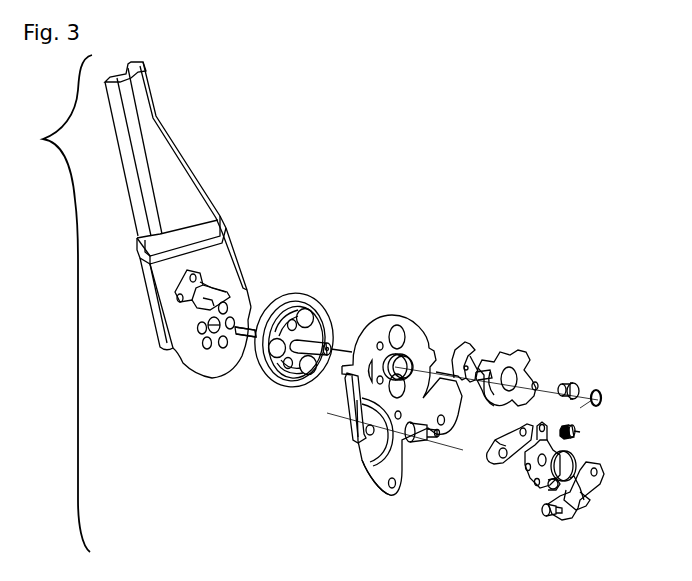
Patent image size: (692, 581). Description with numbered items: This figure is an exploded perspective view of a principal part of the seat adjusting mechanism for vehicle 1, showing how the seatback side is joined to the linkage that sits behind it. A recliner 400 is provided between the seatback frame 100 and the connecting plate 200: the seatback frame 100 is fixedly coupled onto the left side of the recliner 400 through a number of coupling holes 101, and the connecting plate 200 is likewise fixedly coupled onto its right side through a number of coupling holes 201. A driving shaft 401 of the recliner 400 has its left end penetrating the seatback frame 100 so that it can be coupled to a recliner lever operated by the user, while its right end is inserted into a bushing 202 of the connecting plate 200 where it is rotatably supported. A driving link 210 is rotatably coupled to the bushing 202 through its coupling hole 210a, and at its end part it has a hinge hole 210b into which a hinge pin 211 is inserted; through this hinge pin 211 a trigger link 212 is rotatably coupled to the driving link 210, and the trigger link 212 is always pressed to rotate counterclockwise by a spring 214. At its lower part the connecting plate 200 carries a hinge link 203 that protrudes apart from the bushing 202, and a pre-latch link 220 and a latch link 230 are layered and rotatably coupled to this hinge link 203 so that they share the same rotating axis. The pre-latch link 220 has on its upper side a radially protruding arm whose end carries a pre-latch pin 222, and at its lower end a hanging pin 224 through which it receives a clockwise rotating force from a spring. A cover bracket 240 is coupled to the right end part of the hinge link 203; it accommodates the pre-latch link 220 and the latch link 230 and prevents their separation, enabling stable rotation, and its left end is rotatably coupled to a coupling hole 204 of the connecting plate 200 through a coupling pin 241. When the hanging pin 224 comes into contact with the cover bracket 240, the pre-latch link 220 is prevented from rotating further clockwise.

The seat adjusting mechanism for vehicle 1 is at (33, 147).
The seatback frame 100 is at (188, 165).
The coupling holes 101 is at (208, 352).
The recliner 400 is at (298, 295).
The driving shaft 401 is at (247, 362).
The connecting plate 200 is at (414, 319).
The coupling holes 201 is at (390, 318).
The bushing 202 is at (386, 387).
The hinge link 203 is at (430, 442).
The coupling hole 204 is at (391, 492).
The driving link 210 is at (516, 365).
The coupling hole 210a is at (502, 400).
The hinge hole 210b is at (536, 386).
The hinge pin 211 is at (574, 388).
The trigger link 212 is at (458, 343).
The spring 214 is at (603, 401).
The pre-latch link 220 is at (582, 450).
The pre-latch pin 222 is at (580, 432).
The hanging pin 224 is at (550, 483).
The latch link 230 is at (498, 465).
The cover bracket 240 is at (600, 485).
The coupling pin 241 is at (553, 517).